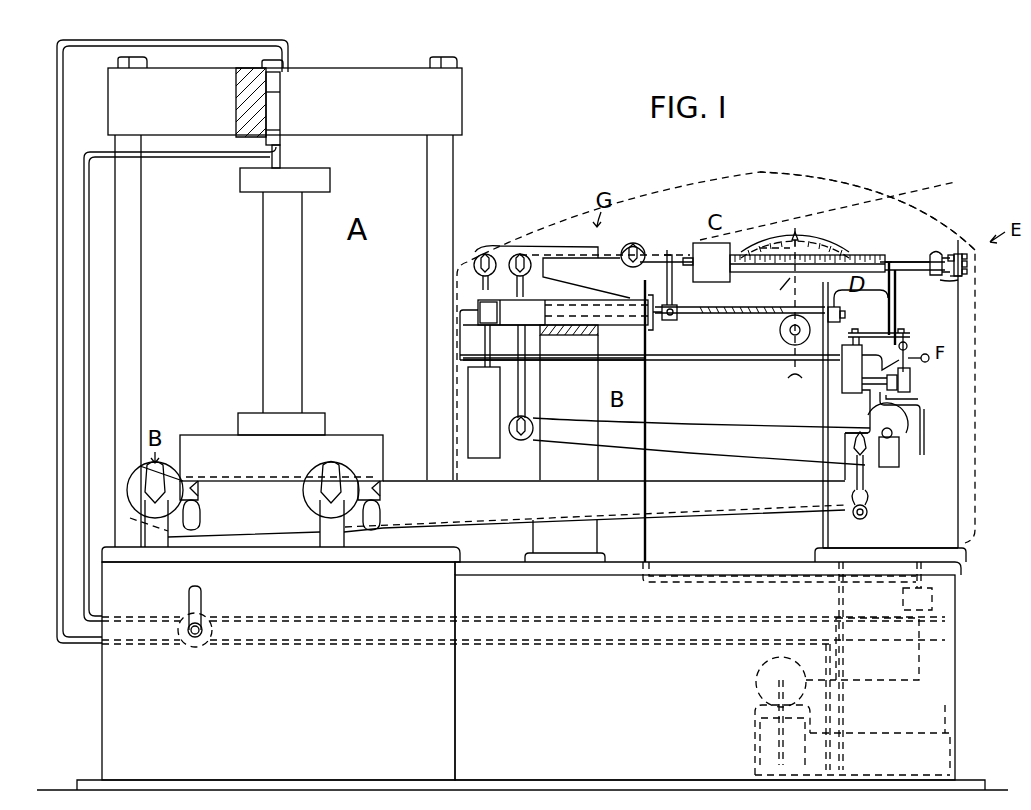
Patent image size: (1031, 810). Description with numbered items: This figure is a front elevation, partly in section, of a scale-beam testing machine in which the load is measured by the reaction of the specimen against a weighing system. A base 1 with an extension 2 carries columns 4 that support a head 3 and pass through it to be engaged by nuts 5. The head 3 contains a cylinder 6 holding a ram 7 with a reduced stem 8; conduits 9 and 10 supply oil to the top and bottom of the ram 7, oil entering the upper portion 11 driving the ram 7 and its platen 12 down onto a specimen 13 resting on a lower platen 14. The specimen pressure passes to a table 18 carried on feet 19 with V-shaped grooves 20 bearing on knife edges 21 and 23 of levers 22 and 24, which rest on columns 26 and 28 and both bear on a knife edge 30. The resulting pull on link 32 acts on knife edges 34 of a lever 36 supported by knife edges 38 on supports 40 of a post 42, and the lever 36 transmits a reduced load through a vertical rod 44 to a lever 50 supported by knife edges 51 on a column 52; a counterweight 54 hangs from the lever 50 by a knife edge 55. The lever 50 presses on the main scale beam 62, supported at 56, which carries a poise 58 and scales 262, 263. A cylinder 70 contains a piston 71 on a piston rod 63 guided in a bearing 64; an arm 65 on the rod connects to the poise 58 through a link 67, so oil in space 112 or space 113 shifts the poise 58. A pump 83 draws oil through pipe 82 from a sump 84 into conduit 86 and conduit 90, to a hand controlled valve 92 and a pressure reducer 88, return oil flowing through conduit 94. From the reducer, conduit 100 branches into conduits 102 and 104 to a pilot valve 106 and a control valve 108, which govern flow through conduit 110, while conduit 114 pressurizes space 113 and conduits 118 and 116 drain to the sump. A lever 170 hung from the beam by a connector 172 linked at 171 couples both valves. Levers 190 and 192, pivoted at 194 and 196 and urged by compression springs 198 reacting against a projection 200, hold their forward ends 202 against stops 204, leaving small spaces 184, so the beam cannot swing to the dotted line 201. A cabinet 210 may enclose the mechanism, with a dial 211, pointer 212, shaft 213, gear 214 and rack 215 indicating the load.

The base 1 is at (281, 663).
The extension 2 is at (708, 671).
The head 3 is at (285, 101).
The columns 4 is at (130, 305).
The nuts 5 is at (134, 62).
The cylinder 6 is at (272, 124).
The ram 7 is at (250, 88).
The stem 8 is at (290, 162).
The conduit 9 is at (97, 46).
The conduit 10 is at (182, 158).
The upper portion of the cylinder 11 is at (262, 64).
The platen 12 is at (318, 180).
The specimen 13 is at (290, 302).
The lower platen 14 is at (310, 422).
The table 18 is at (281, 458).
The feet 19 is at (196, 492).
The V-shaped grooves 20 is at (200, 498).
The knife edges 21 is at (196, 513).
The lever 22 is at (261, 501).
The knife edges 23 is at (382, 512).
The lever 24 is at (487, 506).
The column 26 is at (153, 548).
The column 28 is at (332, 548).
The knife edge 30 is at (868, 514).
The link 32 is at (855, 468).
The knife edges 34 is at (852, 444).
The lever 36 is at (701, 441).
The knife edges 38 is at (893, 433).
The supports 40 is at (889, 467).
The post 42 is at (895, 456).
The vertical rod 44 is at (527, 390).
The lever 50 is at (548, 250).
The pivot 51 is at (518, 254).
The column 52 is at (569, 407).
The counterweight 54 is at (484, 412).
The knife edge 55 is at (485, 254).
The scale beam support 56 is at (635, 244).
The poise 58 is at (730, 278).
The main scale beam 62 is at (835, 262).
The piston rod 63 is at (530, 310).
The bearing 64 is at (830, 307).
The arm 65 is at (676, 308).
The link 67 is at (670, 255).
The cylinder 70 is at (491, 330).
The piston 71 is at (480, 305).
The pipe 82 is at (760, 752).
The motor-driven pump 83 is at (756, 676).
The sump 84 is at (950, 720).
The conduit 86 is at (916, 650).
The pressure reducer 88 is at (903, 600).
The conduit 90 is at (436, 616).
The hand controlled valve 92 is at (206, 616).
The conduit 94 is at (424, 646).
The conduit 100 is at (924, 490).
The conduit 102 is at (897, 386).
The conduit 104 is at (907, 345).
The pilot valve 106 is at (910, 378).
The control valve 108 is at (845, 383).
The conduit 110 is at (720, 360).
The space 112 is at (462, 315).
The space 113 is at (540, 335).
The conduit 114 is at (648, 408).
The conduit 116 is at (823, 545).
The conduit 118 is at (912, 405).
The lever 170 is at (866, 332).
The link connection 171 is at (903, 307).
The connector 172 is at (895, 312).
The spaces 184 is at (888, 258).
The lever 190 is at (962, 252).
The lever 192 is at (962, 278).
The pivot 194 is at (951, 254).
The pivot 196 is at (960, 284).
The compression springs 198 is at (968, 256).
The projection 200 is at (968, 264).
The dotted line 201 is at (905, 192).
The forward ends 202 is at (946, 255).
The stops 204 is at (930, 262).
The cabinet 210 is at (785, 180).
The dial 211 is at (818, 235).
The pointer 212 is at (759, 247).
The shaft 213 is at (788, 335).
The gear 214 is at (790, 350).
The rack 215 is at (772, 315).
The scale 262 is at (770, 205).
The scale 263 is at (771, 294).